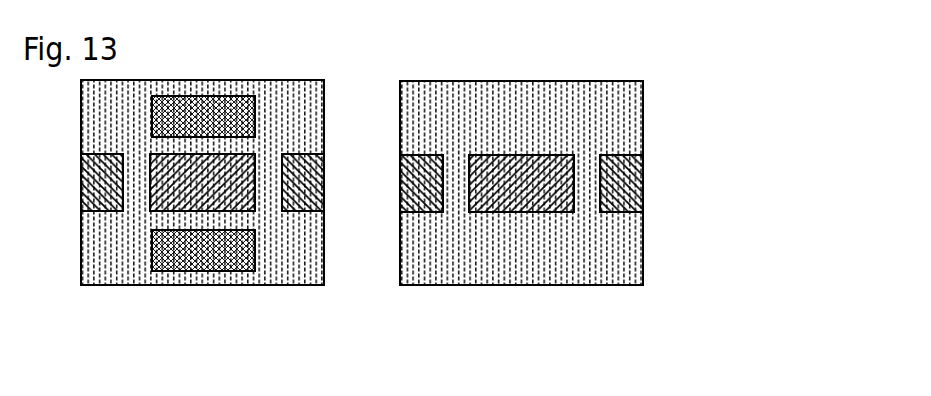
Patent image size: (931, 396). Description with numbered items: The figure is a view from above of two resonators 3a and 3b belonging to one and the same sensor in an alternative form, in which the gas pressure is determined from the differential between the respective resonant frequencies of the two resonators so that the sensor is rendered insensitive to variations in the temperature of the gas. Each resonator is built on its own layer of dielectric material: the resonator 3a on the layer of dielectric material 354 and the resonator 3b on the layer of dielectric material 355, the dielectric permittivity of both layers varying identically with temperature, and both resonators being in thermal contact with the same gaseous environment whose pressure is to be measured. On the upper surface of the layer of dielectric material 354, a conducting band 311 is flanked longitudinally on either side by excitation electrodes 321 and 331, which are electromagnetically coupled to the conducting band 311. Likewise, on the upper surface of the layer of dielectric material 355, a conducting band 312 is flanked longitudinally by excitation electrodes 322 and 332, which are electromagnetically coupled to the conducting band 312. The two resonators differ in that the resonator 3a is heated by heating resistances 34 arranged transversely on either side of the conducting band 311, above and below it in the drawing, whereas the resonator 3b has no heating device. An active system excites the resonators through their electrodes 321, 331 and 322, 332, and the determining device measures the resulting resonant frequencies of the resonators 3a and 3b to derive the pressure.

The resonator 3a is at (204, 191).
The resonator 3b is at (521, 197).
The heating resistances 34 is at (205, 95).
The conducting band 311 is at (258, 182).
The conducting band 312 is at (575, 182).
The excitation electrode 321 is at (82, 184).
The excitation electrode 322 is at (402, 185).
The excitation electrode 331 is at (325, 181).
The excitation electrode 332 is at (643, 180).
The layer of dielectric material 354 is at (200, 285).
The layer of dielectric material 355 is at (520, 285).